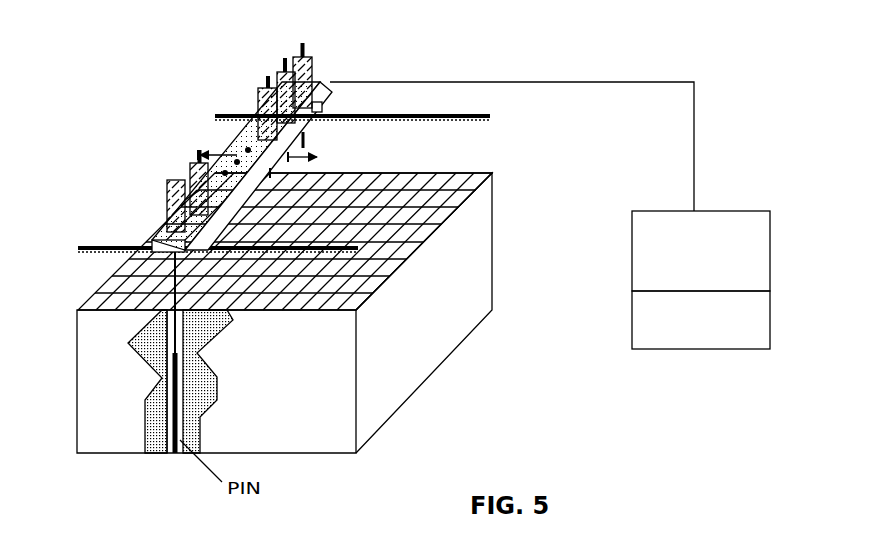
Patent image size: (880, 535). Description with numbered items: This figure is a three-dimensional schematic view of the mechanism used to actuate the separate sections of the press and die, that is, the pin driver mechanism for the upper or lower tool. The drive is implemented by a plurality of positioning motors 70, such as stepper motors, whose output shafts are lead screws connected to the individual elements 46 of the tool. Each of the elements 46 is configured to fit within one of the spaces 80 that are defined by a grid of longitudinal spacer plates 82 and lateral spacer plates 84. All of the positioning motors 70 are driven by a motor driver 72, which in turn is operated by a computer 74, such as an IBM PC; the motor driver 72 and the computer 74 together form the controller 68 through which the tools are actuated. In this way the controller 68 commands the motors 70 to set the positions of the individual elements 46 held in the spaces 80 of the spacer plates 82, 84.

The elements 46 is at (175, 272).
The controller 68 is at (748, 180).
The positioning motors 70 is at (280, 103).
The motor driver 72 is at (772, 242).
The computer 74 is at (772, 318).
The spaces 80 is at (112, 311).
The longitudinal spacer plates 82 is at (400, 268).
The lateral spacer plates 84 is at (372, 280).